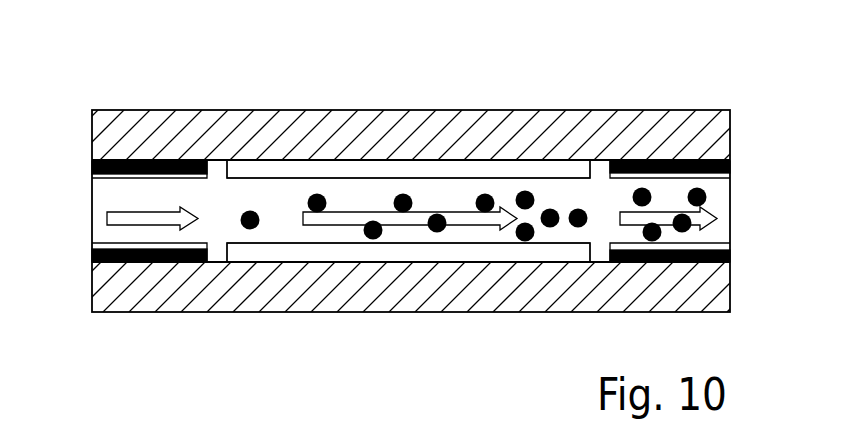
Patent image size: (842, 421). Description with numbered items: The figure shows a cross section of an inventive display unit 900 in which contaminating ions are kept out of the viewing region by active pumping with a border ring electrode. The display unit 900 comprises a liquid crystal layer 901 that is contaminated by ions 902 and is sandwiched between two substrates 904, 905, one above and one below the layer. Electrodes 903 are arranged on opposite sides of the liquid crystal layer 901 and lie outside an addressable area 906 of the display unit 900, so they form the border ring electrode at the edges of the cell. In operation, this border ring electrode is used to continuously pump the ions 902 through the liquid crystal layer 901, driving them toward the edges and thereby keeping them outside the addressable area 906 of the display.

The display unit 900 is at (149, 88).
The liquid crystal layer 901 is at (85, 177).
The ions 902 is at (256, 227).
The electrodes 903 is at (732, 255).
The substrate 904 is at (85, 112).
The substrate 905 is at (85, 257).
The addressable area 906 is at (600, 98).